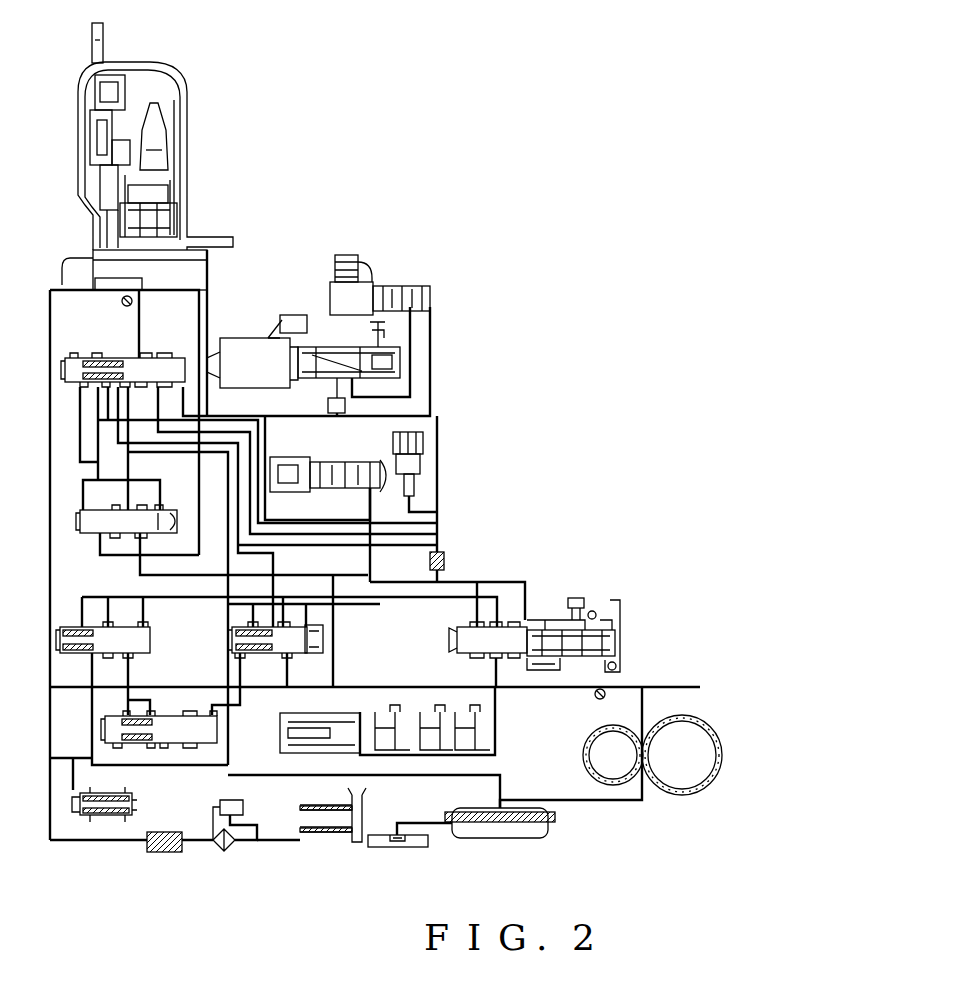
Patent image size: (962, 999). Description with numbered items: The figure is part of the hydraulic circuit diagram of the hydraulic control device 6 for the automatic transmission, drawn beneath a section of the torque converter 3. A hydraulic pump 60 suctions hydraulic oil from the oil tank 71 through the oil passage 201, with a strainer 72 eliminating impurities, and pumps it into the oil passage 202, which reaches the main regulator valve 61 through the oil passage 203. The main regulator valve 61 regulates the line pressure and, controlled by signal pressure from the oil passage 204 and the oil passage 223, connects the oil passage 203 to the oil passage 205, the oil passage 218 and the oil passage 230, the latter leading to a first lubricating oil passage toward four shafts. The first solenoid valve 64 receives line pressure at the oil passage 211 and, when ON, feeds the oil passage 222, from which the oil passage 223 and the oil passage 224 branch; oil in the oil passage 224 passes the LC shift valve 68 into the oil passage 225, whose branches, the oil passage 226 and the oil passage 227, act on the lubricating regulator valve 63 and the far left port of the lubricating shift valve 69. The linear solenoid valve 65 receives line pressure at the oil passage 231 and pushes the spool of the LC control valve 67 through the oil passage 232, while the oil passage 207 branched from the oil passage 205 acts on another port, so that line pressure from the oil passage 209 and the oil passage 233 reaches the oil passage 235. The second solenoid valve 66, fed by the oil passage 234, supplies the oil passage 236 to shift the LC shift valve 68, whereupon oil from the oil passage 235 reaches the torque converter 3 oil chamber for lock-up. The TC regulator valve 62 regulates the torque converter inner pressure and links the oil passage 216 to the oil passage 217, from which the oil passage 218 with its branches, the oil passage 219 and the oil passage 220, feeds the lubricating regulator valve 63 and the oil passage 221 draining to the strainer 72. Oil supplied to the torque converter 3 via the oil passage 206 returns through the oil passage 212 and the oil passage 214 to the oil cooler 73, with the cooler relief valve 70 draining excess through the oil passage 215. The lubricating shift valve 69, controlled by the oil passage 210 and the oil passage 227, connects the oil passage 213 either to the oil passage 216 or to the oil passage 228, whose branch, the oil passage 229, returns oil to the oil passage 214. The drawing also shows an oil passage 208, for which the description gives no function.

The torque converter 3 is at (172, 82).
The hydraulic control device 6 is at (548, 209).
The hydraulic pump 60 is at (725, 754).
The main regulator valve 61 is at (596, 602).
The TC regulator valve 62 is at (295, 652).
The lubricating regulator valve 63 is at (155, 636).
The first solenoid valve 64 is at (372, 276).
The linear solenoid valve 65 is at (237, 336).
The second solenoid valve 66 is at (290, 456).
The LC control valve 67 is at (92, 537).
The LC shift valve 68 is at (96, 353).
The lubricating shift valve 69 is at (118, 713).
The cooler relief valve 70 is at (141, 798).
The oil tank 71 is at (398, 848).
The strainer 72 is at (552, 822).
The oil cooler 73 is at (165, 854).
The oil passage 201 is at (640, 800).
The oil passage 202 is at (645, 690).
The oil passage 203 is at (514, 662).
The oil passage 204 is at (456, 672).
The oil passage 205 is at (518, 598).
The oil passage 206 is at (198, 344).
The oil passage 207 is at (98, 557).
The oil passage 208 is at (320, 626).
The oil passage 209 is at (338, 669).
The oil passage 210 is at (295, 690).
The oil passage 211 is at (434, 332).
The oil passage 212 is at (215, 280).
The oil passage 213 is at (64, 692).
The oil passage 214 is at (100, 843).
The oil passage 215 is at (70, 778).
The oil passage 216 is at (157, 697).
The oil passage 217 is at (290, 614).
The oil passage 218 is at (480, 592).
The oil passage 219 is at (147, 613).
The oil passage 220 is at (122, 596).
The oil passage 221 is at (232, 778).
The oil passage 222 is at (440, 452).
The oil passage 223 is at (448, 580).
The oil passage 224 is at (375, 580).
The oil passage 225 is at (95, 402).
The oil passage 226 is at (130, 654).
The oil passage 227 is at (122, 672).
The oil passage 228 is at (186, 766).
The oil passage 229 is at (56, 758).
The oil passage 230 is at (500, 718).
The oil passage 231 is at (434, 380).
The oil passage 232 is at (98, 476).
The oil passage 233 is at (280, 572).
The oil passage 234 is at (384, 470).
The oil passage 235 is at (128, 500).
The oil passage 236 is at (137, 316).